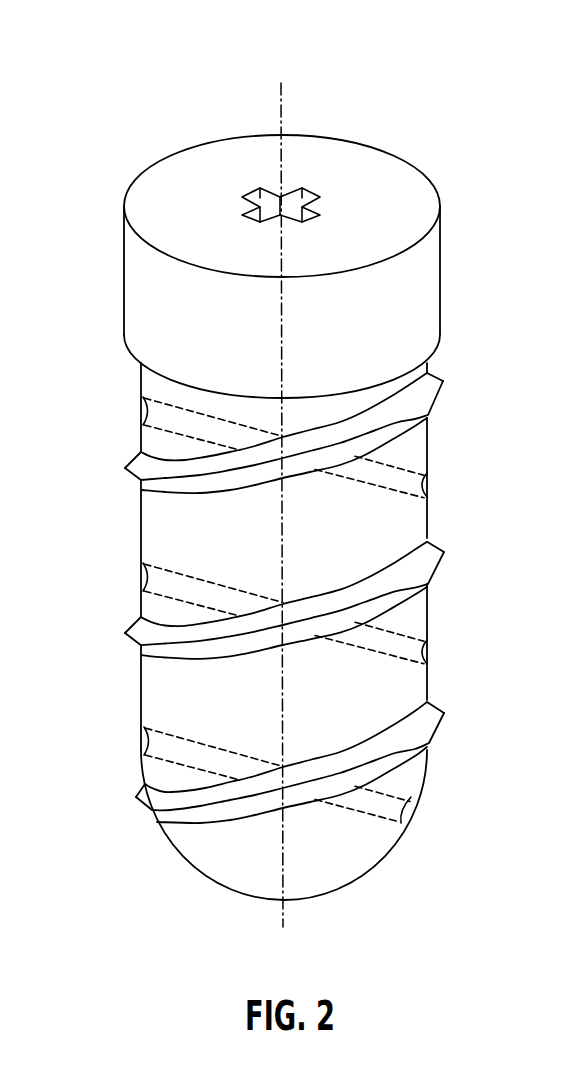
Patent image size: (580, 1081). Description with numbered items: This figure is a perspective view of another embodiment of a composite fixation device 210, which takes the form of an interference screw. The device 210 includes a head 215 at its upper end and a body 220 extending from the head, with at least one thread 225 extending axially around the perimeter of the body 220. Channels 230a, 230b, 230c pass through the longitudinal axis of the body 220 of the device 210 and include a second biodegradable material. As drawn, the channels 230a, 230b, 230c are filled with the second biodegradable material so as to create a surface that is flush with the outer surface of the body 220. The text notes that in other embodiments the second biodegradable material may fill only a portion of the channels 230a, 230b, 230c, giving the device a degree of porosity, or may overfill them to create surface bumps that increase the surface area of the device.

The composite fixation device 210 is at (127, 135).
The head 215 is at (443, 281).
The body 220 is at (428, 447).
The thread 225 is at (444, 381).
The channel 230a is at (428, 488).
The channel 230b is at (428, 655).
The channel 230c is at (412, 808).